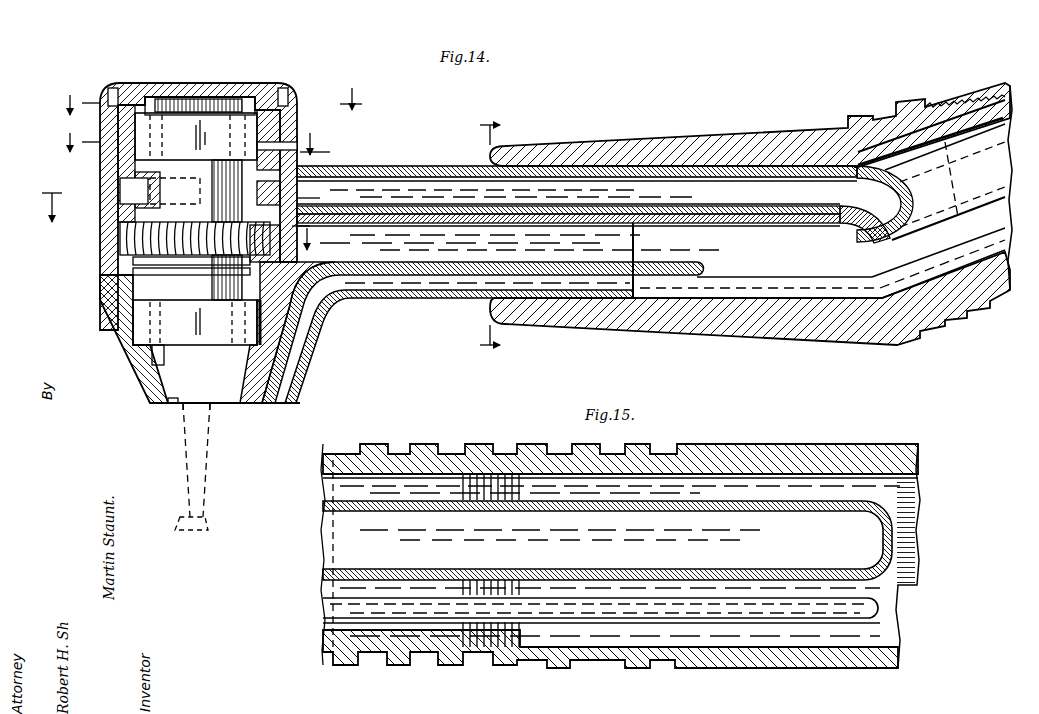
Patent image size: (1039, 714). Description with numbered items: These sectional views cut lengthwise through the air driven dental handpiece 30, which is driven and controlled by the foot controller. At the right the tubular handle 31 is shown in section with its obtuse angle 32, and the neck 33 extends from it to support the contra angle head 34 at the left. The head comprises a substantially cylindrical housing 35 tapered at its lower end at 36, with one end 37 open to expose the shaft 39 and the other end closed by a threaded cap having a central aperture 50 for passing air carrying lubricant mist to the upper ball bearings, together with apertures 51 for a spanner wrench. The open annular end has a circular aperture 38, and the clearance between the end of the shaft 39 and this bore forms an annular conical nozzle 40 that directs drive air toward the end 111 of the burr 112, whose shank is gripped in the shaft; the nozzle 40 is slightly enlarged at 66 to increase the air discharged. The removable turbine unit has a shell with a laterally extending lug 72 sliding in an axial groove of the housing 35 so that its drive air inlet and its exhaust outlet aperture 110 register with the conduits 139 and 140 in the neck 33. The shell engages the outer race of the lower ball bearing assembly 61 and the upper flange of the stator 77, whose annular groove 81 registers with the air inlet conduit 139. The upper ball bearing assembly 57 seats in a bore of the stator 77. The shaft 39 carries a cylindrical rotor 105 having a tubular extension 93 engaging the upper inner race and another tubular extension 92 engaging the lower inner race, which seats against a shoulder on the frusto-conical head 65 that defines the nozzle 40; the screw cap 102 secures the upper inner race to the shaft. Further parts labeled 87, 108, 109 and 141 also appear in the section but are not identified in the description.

In FIG. 14, the handpiece 30 is at (812, 118).
In FIG. 15, the tubular handle 31 is at (805, 442).
In FIG. 14, the obtuse angle 32 is at (690, 132).
In FIG. 14, the neck 33 is at (390, 162).
In FIG. 14, the contra angle head 34 is at (300, 128).
In FIG. 14, the cylindrical housing 35 is at (150, 240).
In FIG. 14, the tapered lower end 36 is at (120, 358).
In FIG. 14, the open end 37 is at (138, 412).
In FIG. 14, the circular aperture 38 is at (163, 406).
In FIG. 14, the shaft 39 is at (218, 406).
In FIG. 14, the annular conical nozzle 40 is at (155, 406).
In FIG. 14, the central aperture 50 is at (190, 94).
In FIG. 14, the spanner apertures 51 is at (124, 90).
In FIG. 14, the upper ball bearing assembly 57 is at (292, 128).
In FIG. 14, the lower ball bearing assembly 61 is at (268, 338).
In FIG. 14, the frusto-conical head 65 is at (148, 360).
In FIG. 14, the nozzle enlargement 66 is at (150, 403).
In FIG. 14, the laterally extending lug 72 is at (122, 185).
In FIG. 14, the stator 77 is at (305, 170).
In FIG. 14, the annular groove 81 is at (298, 186).
In FIG. 14, the block 87 is at (128, 208).
In FIG. 14, the lower tubular extension 92 is at (140, 288).
In FIG. 14, the upper tubular extension 93 is at (135, 196).
In FIG. 14, the screw cap 102 is at (222, 98).
In FIG. 14, the cylindrical rotor 105 is at (287, 218).
In FIG. 14, the washer 108 is at (125, 262).
In FIG. 14, the washer 109 is at (130, 273).
In FIG. 14, the outlet aperture 110 is at (285, 270).
In FIG. 14, the burr end 111 is at (206, 524).
In FIG. 14, the burr 112 is at (205, 463).
In FIG. 14, the air inlet conduit 139 is at (425, 182).
In FIG. 14, the exhaust conduit 140 is at (480, 238).
In FIG. 14, the inner tube 141 is at (375, 210).